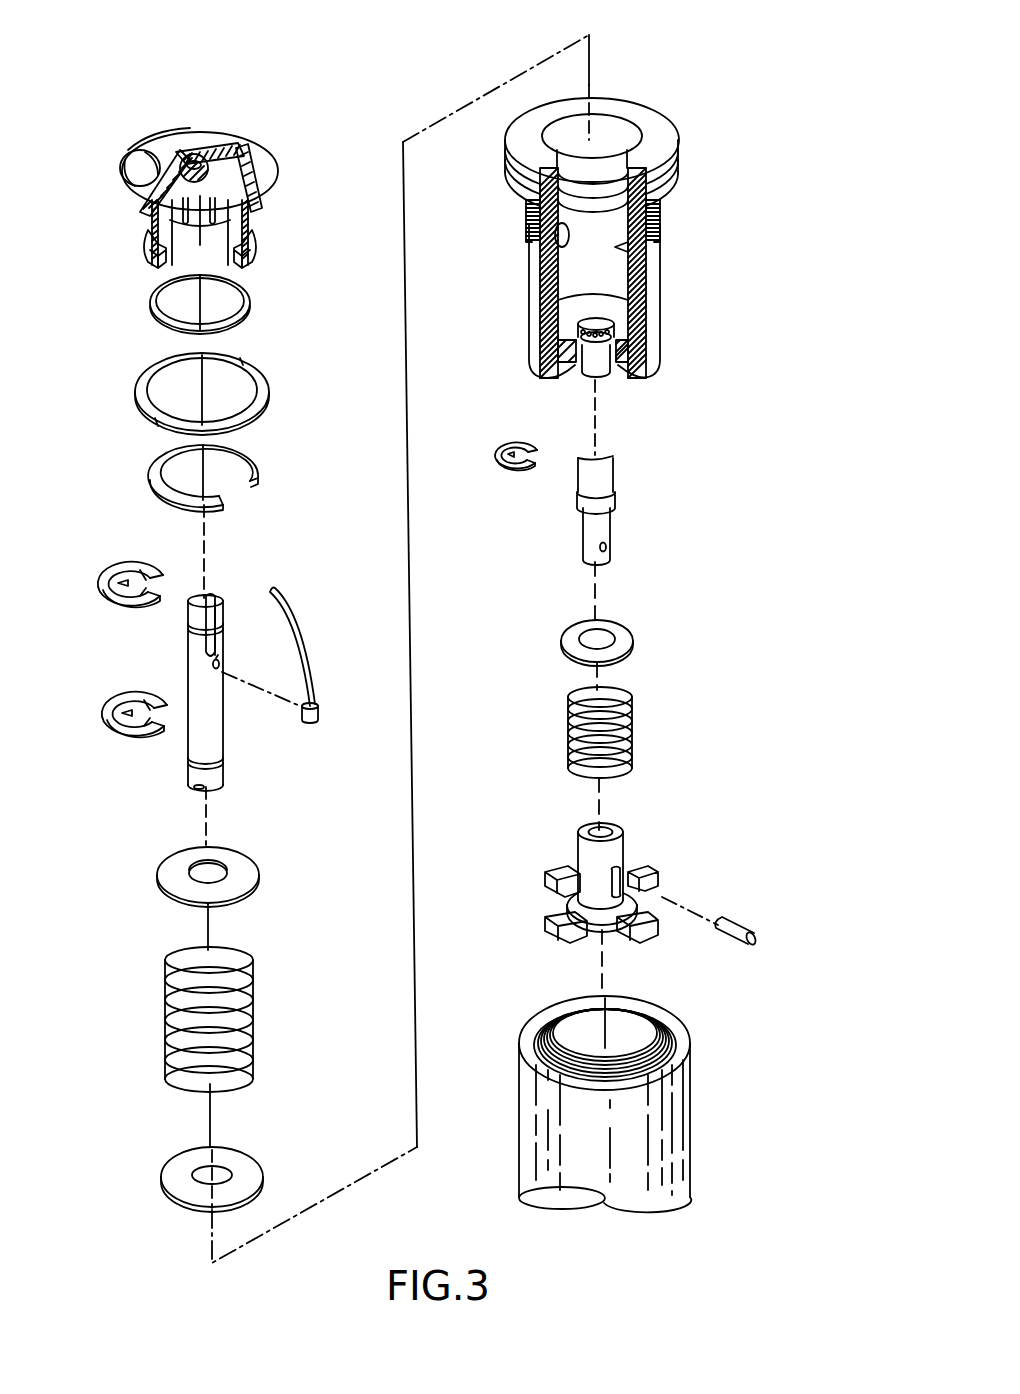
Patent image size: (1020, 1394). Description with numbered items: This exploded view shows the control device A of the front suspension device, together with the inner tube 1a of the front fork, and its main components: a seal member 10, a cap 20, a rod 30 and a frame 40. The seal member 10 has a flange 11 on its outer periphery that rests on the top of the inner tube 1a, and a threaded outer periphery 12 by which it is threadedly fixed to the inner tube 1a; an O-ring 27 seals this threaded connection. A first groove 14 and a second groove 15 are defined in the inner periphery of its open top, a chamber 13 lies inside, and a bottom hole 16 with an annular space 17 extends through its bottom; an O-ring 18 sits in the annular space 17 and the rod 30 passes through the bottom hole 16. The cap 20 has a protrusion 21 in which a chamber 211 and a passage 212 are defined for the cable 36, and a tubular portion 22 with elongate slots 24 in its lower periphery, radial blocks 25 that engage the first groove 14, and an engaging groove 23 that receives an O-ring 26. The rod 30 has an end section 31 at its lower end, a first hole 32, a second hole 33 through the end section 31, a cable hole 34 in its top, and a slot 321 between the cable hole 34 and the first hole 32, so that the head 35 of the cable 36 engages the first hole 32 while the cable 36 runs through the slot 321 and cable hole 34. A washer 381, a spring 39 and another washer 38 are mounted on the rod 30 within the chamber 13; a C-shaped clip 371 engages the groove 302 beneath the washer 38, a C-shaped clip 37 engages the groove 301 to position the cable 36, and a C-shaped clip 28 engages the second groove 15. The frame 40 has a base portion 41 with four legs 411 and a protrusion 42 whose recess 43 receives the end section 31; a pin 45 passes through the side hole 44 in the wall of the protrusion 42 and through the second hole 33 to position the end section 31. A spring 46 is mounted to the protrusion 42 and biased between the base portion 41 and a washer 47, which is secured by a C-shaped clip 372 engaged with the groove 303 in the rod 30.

The control device A is at (615, 209).
The inner tube 1a is at (678, 1108).
The seal member 10 is at (615, 252).
The flange 11 is at (680, 172).
The threaded outer periphery 12 is at (662, 212).
The chamber 13 is at (570, 280).
The first groove 14 is at (550, 267).
The second groove 15 is at (630, 262).
The bottom hole 16 is at (582, 355).
The annular space 17 is at (620, 380).
The O-ring 18 is at (612, 350).
The cap 20 is at (226, 165).
The protrusion 21 is at (215, 140).
The chamber 211 is at (148, 170).
The passage 212 is at (207, 160).
The tubular portion 22 is at (160, 218).
The engaging groove 23 is at (215, 222).
The elongate slots 24 is at (158, 258).
The radial blocks 25 is at (248, 258).
The O-ring 26 is at (155, 297).
The O-ring 27 is at (150, 375).
The C-shaped clip 28 is at (165, 462).
The rod 30 is at (234, 637).
The groove 301 is at (193, 627).
The groove 302 is at (225, 761).
The groove 303 is at (614, 493).
The end section 31 is at (628, 509).
The first hole 32 is at (210, 672).
The slot 321 is at (222, 641).
The second hole 33 is at (607, 547).
The cable hole 34 is at (210, 598).
The head 35 is at (318, 708).
The cable 36 is at (300, 637).
The C-shaped clip 37 is at (130, 568).
The C-shaped clip 371 is at (133, 730).
The C-shaped clip 372 is at (507, 468).
The washer 38 is at (175, 865).
The washer 381 is at (182, 1172).
The spring 39 is at (168, 1027).
The frame 40 is at (625, 877).
The base portion 41 is at (600, 925).
The legs 411 is at (560, 921).
The protrusion 42 is at (590, 872).
The recess 43 is at (620, 837).
The slot 44 is at (625, 887).
The pin 45 is at (735, 942).
The spring 46 is at (632, 733).
The washer 47 is at (620, 642).